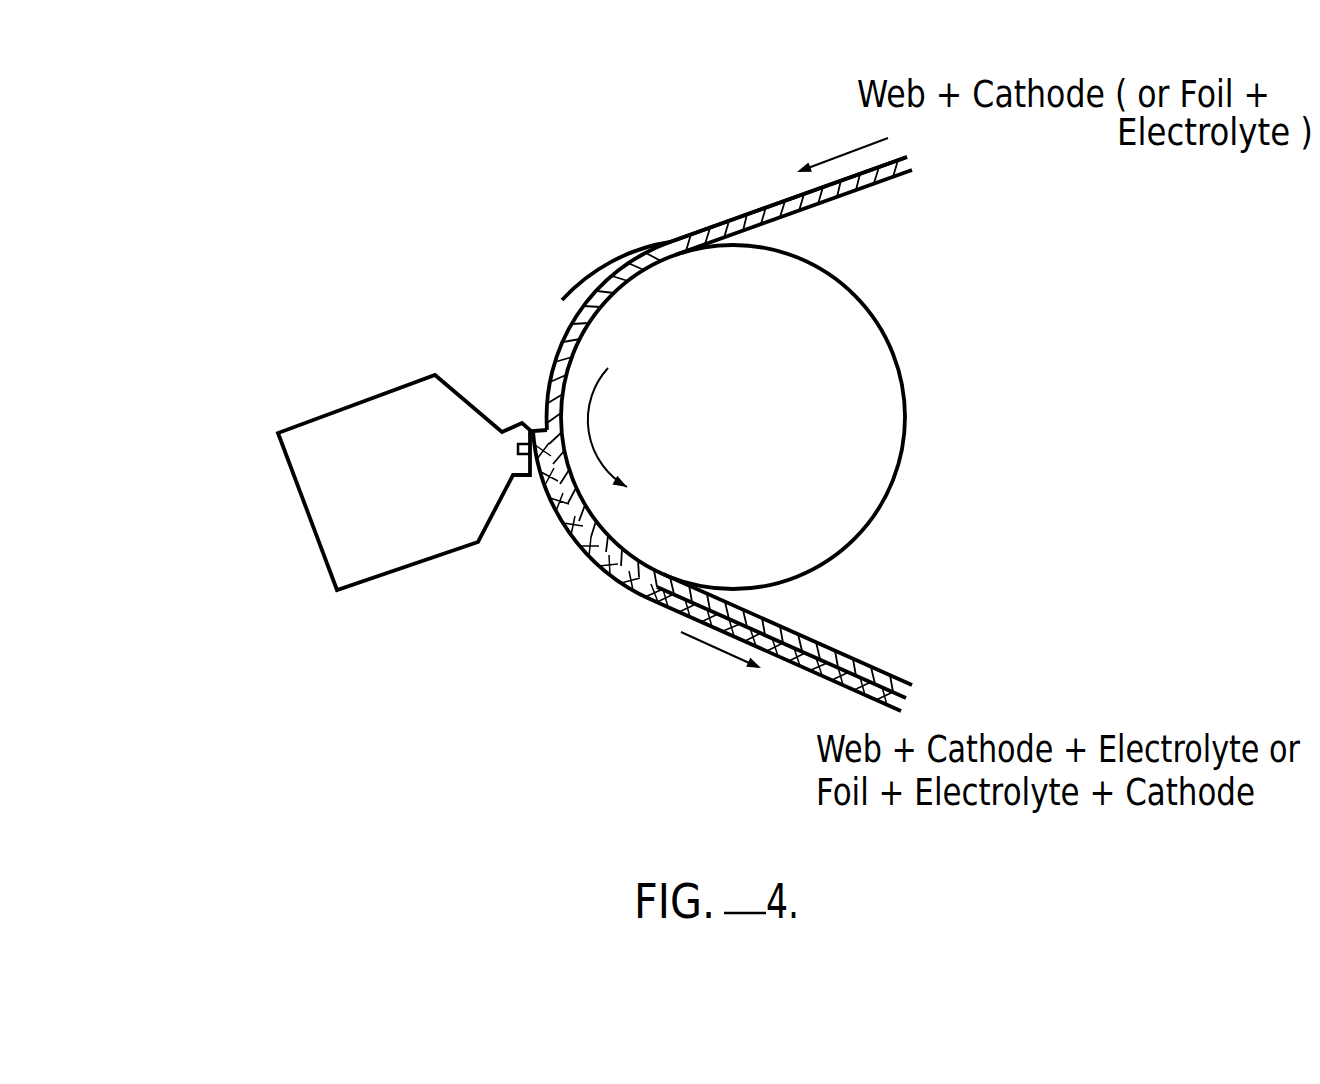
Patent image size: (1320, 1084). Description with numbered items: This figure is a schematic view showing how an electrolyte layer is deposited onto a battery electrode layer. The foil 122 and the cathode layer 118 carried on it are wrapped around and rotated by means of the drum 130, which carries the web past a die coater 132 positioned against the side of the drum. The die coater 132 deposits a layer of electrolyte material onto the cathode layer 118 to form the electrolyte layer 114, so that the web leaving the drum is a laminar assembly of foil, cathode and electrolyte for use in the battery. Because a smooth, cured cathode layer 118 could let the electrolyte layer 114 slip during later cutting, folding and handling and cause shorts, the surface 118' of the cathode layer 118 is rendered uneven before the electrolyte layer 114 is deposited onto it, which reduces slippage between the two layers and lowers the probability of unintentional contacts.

The electrolyte layer 114 is at (813, 670).
The cathode layer 118 is at (807, 427).
The surface of the cathode layer 118' is at (734, 208).
The foil 122 is at (843, 197).
The drum 130 is at (758, 350).
The die coater 132 is at (295, 458).